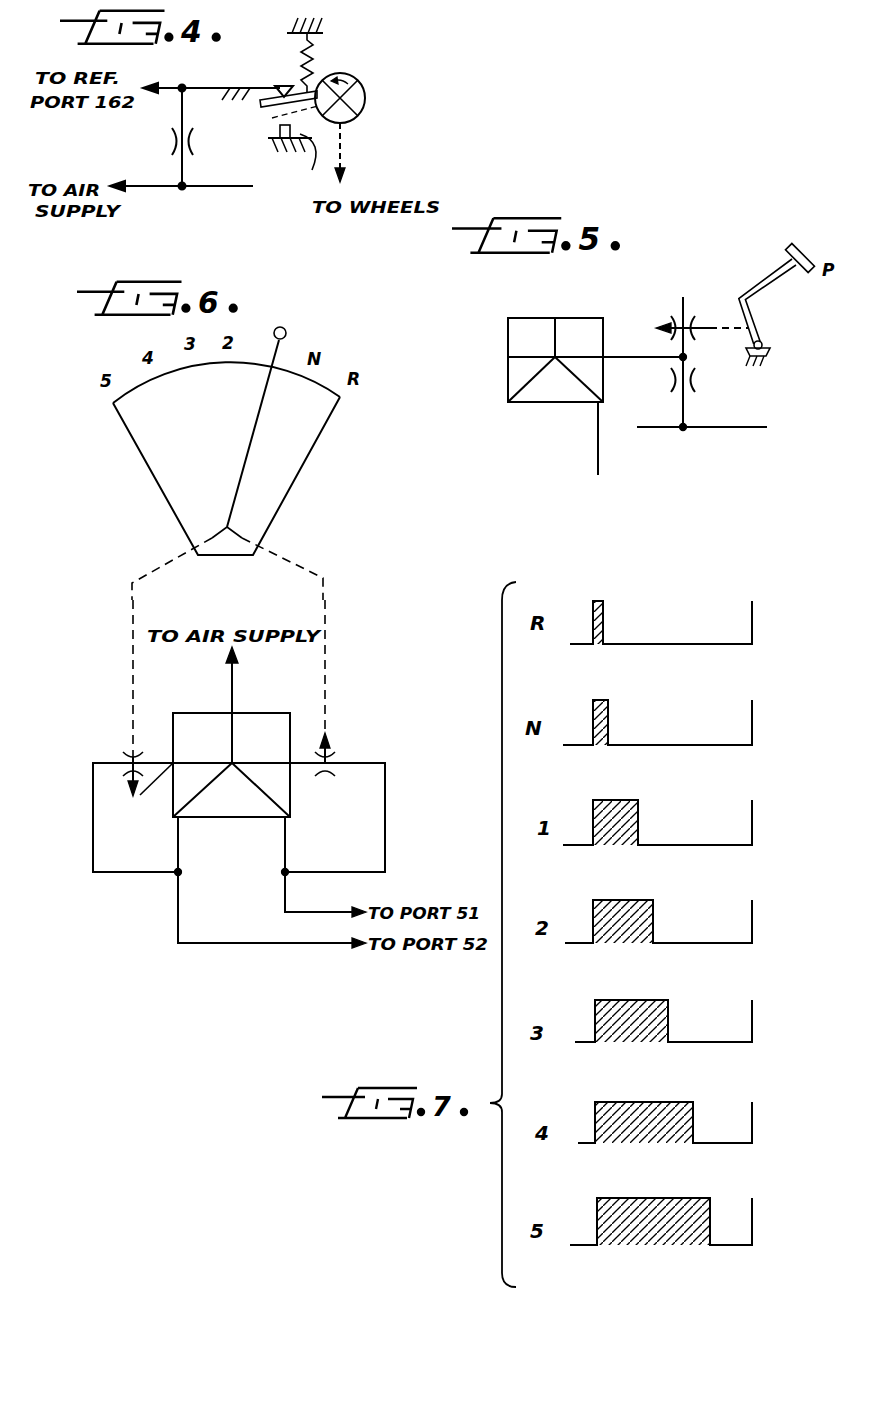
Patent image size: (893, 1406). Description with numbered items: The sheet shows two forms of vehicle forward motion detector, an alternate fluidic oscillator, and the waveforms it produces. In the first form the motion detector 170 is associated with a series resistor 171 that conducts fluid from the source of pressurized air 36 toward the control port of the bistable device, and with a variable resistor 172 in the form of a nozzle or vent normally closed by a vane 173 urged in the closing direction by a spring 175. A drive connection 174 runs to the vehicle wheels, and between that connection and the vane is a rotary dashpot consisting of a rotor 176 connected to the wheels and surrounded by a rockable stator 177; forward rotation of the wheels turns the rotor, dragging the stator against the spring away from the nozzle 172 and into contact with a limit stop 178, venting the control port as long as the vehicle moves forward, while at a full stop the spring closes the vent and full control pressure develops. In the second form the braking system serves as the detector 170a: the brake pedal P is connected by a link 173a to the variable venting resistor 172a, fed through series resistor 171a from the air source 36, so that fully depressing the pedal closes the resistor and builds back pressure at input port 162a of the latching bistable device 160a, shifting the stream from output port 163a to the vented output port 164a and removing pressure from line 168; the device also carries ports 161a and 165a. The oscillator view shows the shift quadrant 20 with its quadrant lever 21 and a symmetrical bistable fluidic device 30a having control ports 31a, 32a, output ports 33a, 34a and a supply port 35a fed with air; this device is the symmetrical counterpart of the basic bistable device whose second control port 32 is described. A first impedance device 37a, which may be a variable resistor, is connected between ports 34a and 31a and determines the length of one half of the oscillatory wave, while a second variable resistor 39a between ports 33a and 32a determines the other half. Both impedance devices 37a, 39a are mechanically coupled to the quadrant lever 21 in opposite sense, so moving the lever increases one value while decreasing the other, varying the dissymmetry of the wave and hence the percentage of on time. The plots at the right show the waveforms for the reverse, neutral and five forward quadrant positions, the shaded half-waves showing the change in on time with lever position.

In FIG. 4, the forward motion detector 170 is at (362, 72).
In FIG. 4, the series resistor 171 is at (192, 141).
In FIG. 4, the variable resistor 172 is at (285, 86).
In FIG. 4, the vane 173 is at (262, 104).
In FIG. 4, the drive connection 174 is at (347, 146).
In FIG. 4, the spring 175 is at (313, 56).
In FIG. 4, the rotor 176 is at (365, 112).
In FIG. 4, the rockable stator 177 is at (366, 92).
In FIG. 4, the limit stop 178 is at (293, 163).
In FIG. 4, the source of pressurized air 36 is at (243, 188).
In FIG. 5, the source of pressurized air 36 is at (722, 428).
In FIG. 5, the bistable device 160a is at (573, 330).
In FIG. 5, the valve port 161a is at (508, 357).
In FIG. 5, the input port 162a is at (615, 358).
In FIG. 5, the output port 163a is at (597, 403).
In FIG. 5, the vented output port 164a is at (510, 402).
In FIG. 5, the valve passage 165a is at (555, 318).
In FIG. 5, the output line 168 is at (598, 440).
In FIG. 5, the forward motion detector 170a is at (718, 250).
In FIG. 5, the series resistor 171a is at (696, 385).
In FIG. 5, the variable venting resistor 172a is at (658, 327).
In FIG. 5, the link 173a is at (718, 328).
In FIG. 6, the shift quadrant 20 is at (165, 480).
In FIG. 6, the quadrant lever 21 is at (256, 418).
In FIG. 6, the symmetrical bistable fluidic device 30a is at (278, 727).
In FIG. 6, the first control port 31a is at (149, 794).
In FIG. 6, the second control port 32 is at (231, 694).
In FIG. 6, the second control port 32a is at (290, 768).
In FIG. 6, the on output port 33a is at (290, 818).
In FIG. 6, the off output port 34a is at (178, 818).
In FIG. 6, the supply port 35a is at (235, 713).
In FIG. 6, the first impedance device 37a is at (128, 757).
In FIG. 6, the second variable resistor 39a is at (331, 753).